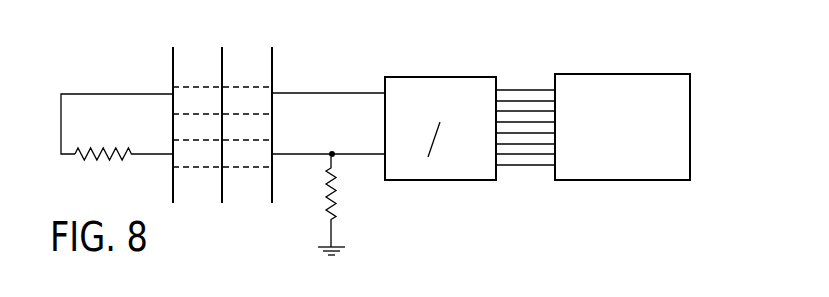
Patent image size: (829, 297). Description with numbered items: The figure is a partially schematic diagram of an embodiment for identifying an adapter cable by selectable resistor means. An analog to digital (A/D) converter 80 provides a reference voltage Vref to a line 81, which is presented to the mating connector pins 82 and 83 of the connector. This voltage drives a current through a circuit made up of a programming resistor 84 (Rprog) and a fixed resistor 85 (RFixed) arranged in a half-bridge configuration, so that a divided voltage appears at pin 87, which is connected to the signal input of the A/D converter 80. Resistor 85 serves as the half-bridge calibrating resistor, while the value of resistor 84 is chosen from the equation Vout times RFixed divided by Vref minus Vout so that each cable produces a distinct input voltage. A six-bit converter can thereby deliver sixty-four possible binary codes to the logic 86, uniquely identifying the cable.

The analog to digital converter 80 is at (470, 173).
The line 81 is at (333, 93).
The mating connector pin 82 is at (254, 58).
The mating connector pin 83 is at (197, 56).
The resistor 84 is at (104, 158).
The resistor 85 is at (335, 199).
The logic 86 is at (647, 151).
The pin 87 is at (146, 152).